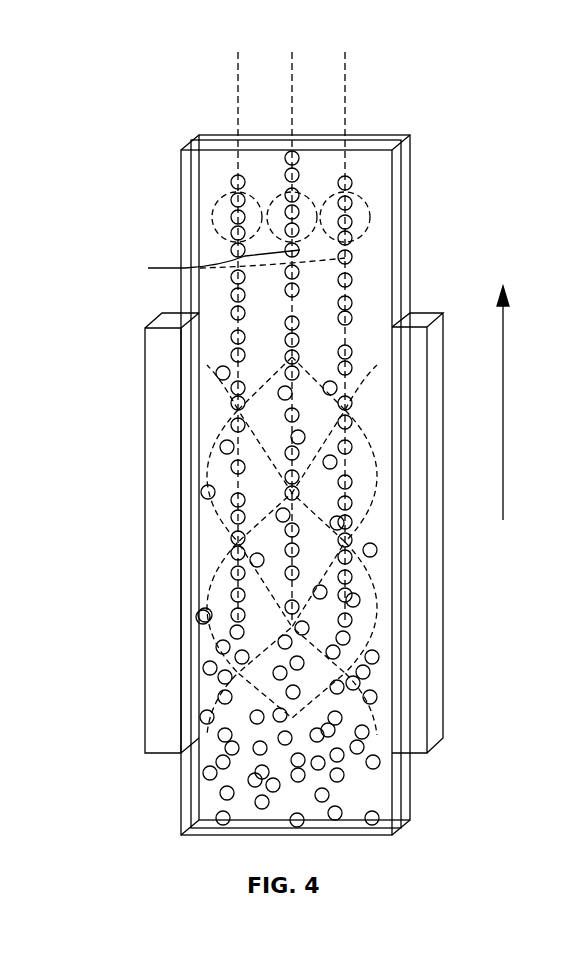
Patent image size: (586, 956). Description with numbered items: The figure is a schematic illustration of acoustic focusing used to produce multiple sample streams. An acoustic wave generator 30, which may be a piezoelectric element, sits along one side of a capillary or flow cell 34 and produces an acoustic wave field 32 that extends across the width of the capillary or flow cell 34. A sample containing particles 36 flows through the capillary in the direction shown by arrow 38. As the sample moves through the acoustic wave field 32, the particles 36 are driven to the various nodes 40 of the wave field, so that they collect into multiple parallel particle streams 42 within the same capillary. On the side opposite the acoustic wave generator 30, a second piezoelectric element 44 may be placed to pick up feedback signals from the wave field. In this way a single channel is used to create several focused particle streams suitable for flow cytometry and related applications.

The acoustic wave generator 30 is at (145, 468).
The acoustic wave field 32 is at (218, 617).
The capillary or flow cell 34 is at (181, 218).
The particles 36 is at (272, 787).
The arrow 38 is at (505, 415).
The nodes 40 is at (462, 483).
The parallel particle streams 42 is at (345, 58).
The second piezoelectric element 44 is at (415, 625).